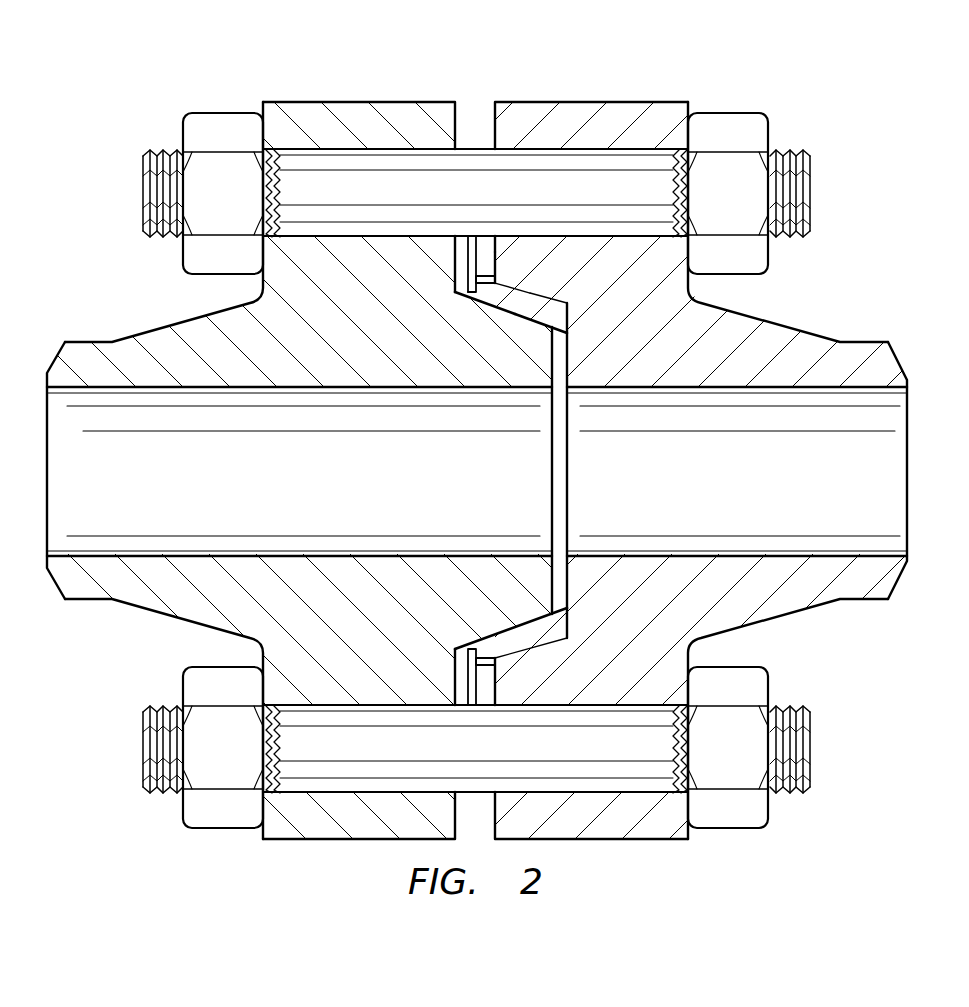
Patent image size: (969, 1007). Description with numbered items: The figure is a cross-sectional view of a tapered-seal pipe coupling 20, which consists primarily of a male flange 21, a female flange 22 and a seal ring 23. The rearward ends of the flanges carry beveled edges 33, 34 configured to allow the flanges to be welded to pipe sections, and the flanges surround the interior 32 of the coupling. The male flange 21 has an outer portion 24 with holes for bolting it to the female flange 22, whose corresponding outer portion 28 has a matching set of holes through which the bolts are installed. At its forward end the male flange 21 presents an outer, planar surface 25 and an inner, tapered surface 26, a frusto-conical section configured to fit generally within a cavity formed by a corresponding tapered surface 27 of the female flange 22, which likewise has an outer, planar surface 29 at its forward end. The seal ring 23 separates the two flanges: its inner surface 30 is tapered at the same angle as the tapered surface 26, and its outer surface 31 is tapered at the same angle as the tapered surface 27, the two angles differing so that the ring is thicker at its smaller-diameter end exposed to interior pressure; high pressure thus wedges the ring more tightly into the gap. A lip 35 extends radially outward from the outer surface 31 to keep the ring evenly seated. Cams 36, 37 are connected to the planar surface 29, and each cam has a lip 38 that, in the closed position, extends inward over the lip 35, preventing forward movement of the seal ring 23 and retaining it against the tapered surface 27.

The coupling 20 is at (477, 420).
The male flange 21 is at (150, 328).
The female flange 22 is at (820, 331).
The seal ring 23 is at (560, 322).
The outer portion 24 is at (346, 106).
The outer, planar surface 25 is at (458, 106).
The inner, tapered surface 26 is at (497, 323).
The tapered surface 27 is at (565, 305).
The outer portion 28 is at (624, 106).
The outer, planar surface 29 is at (492, 106).
The inner surface 30 is at (527, 331).
The outer surface 31 is at (540, 298).
The interior 32 is at (316, 486).
The beveled edge 33 is at (57, 342).
The beveled edge 34 is at (902, 350).
The lip 35 is at (492, 282).
The cam 36 is at (486, 243).
The cam 37 is at (490, 700).
The lip 38 is at (463, 283).